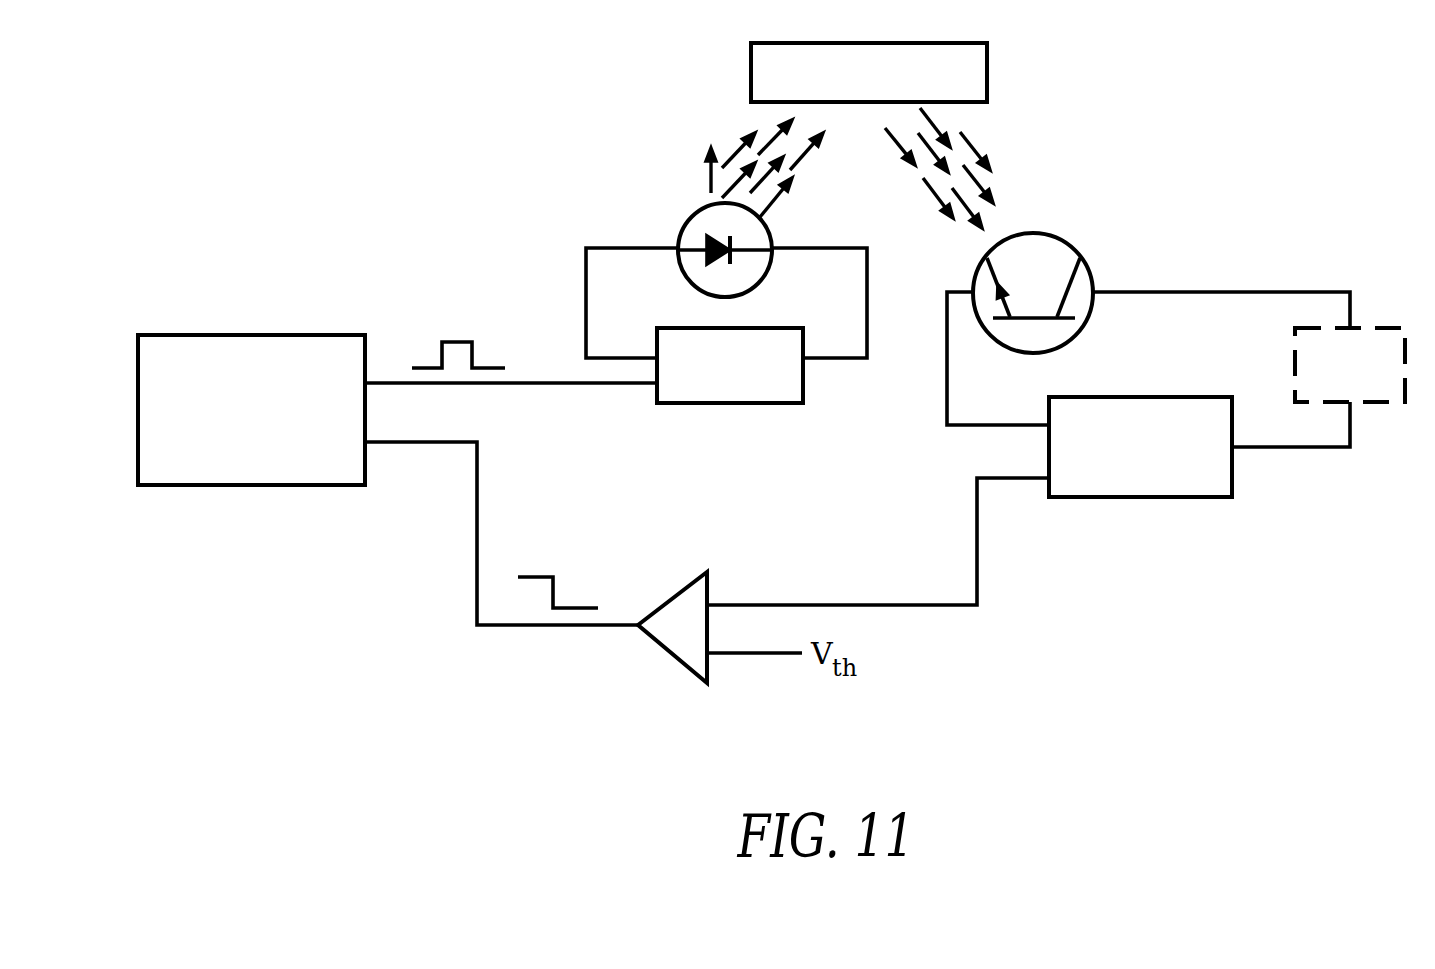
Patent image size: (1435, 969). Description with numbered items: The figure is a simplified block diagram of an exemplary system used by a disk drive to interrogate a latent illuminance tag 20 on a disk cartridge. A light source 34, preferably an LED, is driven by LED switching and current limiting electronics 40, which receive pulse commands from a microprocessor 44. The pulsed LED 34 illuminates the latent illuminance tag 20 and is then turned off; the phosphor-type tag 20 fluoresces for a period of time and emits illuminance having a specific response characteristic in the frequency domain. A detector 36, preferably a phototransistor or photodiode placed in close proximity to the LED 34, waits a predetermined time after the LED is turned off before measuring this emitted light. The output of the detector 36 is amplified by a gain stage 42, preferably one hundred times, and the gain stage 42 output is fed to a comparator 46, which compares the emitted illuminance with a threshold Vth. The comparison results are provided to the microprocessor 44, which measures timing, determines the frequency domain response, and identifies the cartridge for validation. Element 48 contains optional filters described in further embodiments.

The latent illuminance tag 20 is at (850, 90).
The light source 34 is at (688, 222).
The detector 36 is at (1013, 277).
The LED switching and current limiting electronics 40 is at (711, 375).
The gain stage 42 is at (1123, 451).
The microprocessor 44 is at (360, 374).
The comparator 46 is at (666, 639).
The optional filters 48 is at (1331, 373).